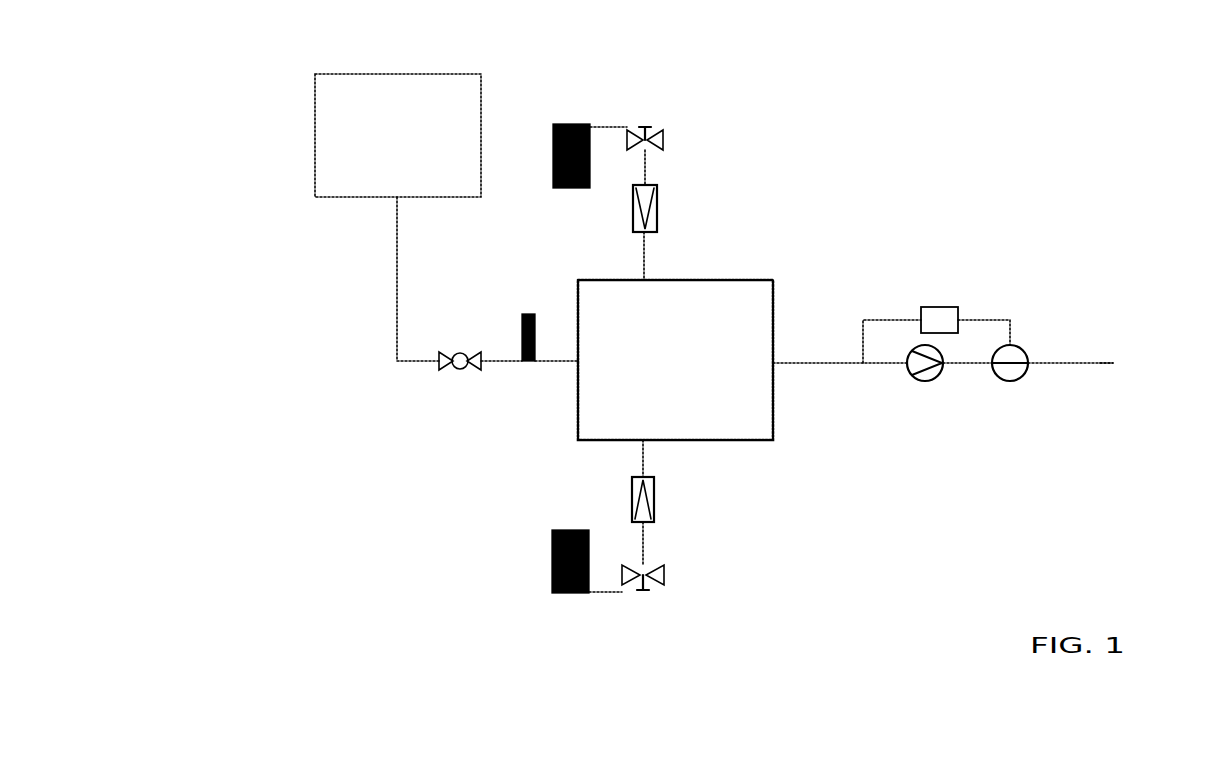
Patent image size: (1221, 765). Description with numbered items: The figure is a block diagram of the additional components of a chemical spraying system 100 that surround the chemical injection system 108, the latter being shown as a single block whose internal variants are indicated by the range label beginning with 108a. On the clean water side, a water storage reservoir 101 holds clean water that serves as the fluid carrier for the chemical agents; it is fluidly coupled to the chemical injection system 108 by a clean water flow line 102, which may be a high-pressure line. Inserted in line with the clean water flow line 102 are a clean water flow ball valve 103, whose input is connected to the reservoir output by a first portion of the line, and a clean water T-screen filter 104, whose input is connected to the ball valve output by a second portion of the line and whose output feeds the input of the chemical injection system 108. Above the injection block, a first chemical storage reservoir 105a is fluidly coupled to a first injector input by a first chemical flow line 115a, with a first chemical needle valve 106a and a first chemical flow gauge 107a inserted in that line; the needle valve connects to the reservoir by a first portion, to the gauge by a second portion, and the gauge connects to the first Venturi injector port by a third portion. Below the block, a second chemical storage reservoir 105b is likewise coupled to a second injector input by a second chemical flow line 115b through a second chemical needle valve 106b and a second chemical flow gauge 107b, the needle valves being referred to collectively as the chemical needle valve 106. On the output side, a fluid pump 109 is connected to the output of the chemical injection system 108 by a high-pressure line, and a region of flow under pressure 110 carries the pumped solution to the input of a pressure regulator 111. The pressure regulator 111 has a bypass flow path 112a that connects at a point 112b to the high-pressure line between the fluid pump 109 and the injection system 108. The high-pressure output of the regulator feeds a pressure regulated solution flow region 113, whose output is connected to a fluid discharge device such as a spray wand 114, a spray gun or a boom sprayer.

The chemical spraying system 100 is at (150, 124).
The water storage reservoir 101 is at (312, 135).
The clean water flow line 102 is at (385, 255).
The clean water flow ball valve 103 is at (453, 375).
The clean water T-screen filter 104 is at (516, 375).
The first chemical storage reservoir 105a is at (573, 117).
The second chemical storage reservoir 105b is at (545, 535).
The chemical needle valve 106 is at (752, 344).
The first chemical needle valve 106a is at (665, 138).
The second chemical needle valve 106b is at (668, 575).
The first chemical flow gauge 107a is at (676, 211).
The second chemical flow gauge 107b is at (668, 492).
The chemical injection system 108 is at (773, 413).
The chamber sections 108a-108f 108a is at (870, 242).
The fluid pump 109 is at (912, 396).
The region of flow under pressure 110 is at (1013, 402).
The pressure regulator 111 is at (945, 308).
The bypass flow path 112a is at (1005, 316).
The bypass connection point 112b is at (862, 360).
The pressure regulated solution flow region 113 is at (1053, 385).
The spray wand 114 is at (1113, 362).
The first chemical flow line 115a is at (607, 128).
The second chemical flow line 115b is at (606, 592).